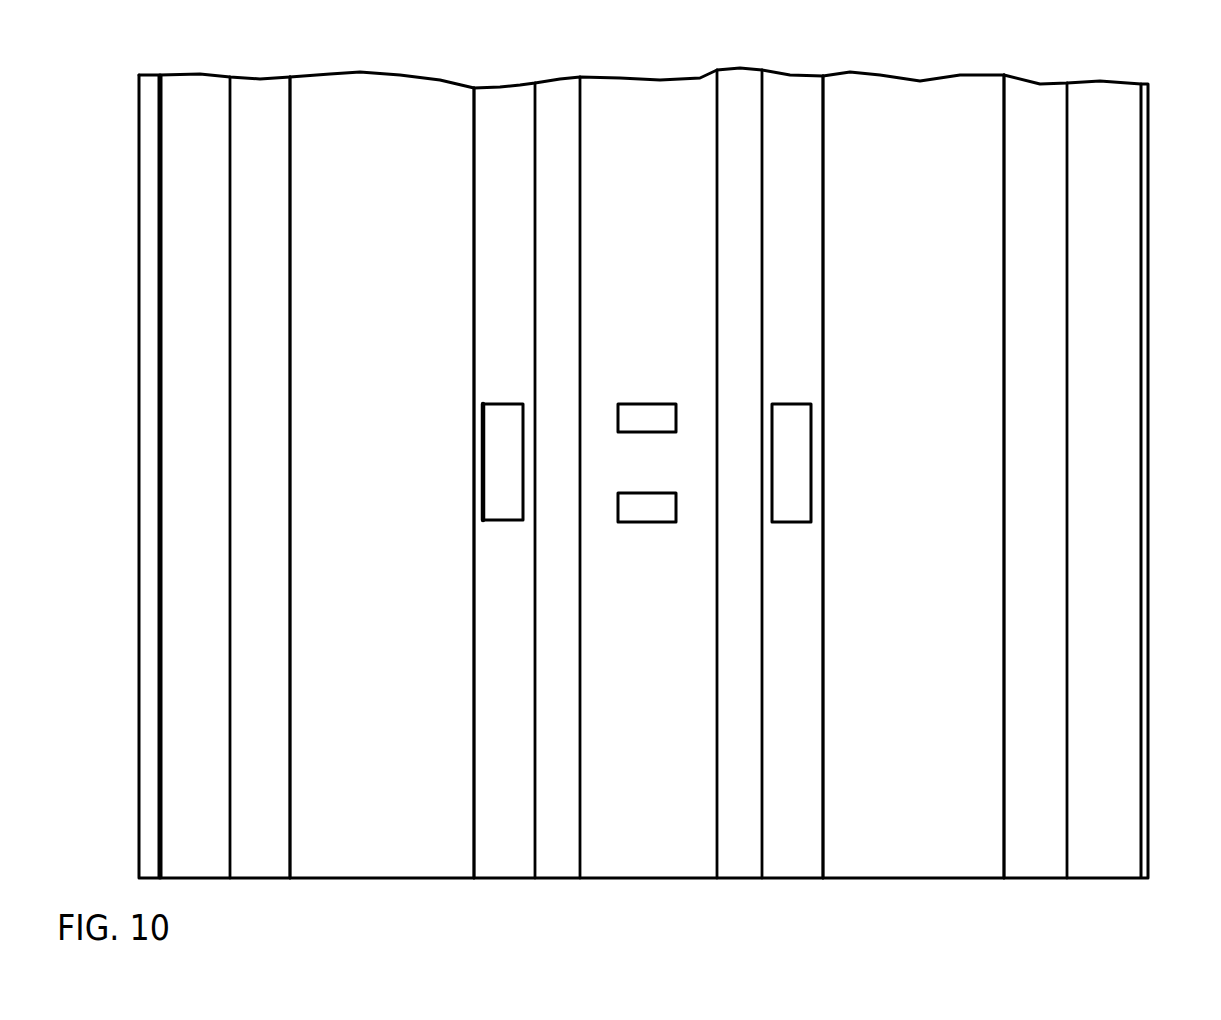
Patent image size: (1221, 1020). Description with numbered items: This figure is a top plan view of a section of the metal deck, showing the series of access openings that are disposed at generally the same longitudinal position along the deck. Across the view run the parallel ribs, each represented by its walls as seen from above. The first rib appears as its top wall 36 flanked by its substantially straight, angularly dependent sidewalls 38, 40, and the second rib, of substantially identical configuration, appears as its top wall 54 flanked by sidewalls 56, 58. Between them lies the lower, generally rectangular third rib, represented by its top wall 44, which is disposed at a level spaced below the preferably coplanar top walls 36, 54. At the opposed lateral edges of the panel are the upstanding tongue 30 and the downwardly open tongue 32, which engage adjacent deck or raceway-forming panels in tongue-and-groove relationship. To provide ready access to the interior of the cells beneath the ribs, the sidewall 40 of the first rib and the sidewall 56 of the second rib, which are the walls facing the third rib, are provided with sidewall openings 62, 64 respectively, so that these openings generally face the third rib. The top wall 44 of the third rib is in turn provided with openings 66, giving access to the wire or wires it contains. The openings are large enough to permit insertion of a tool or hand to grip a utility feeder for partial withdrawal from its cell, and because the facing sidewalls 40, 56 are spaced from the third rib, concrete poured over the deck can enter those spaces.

The upstanding tongue 30 is at (1145, 410).
The downwardly open tongue 32 is at (146, 413).
The top wall 36 is at (396, 826).
The sidewall 38 is at (271, 826).
The sidewall 40 is at (516, 826).
The top wall 44 is at (656, 826).
The top wall 54 is at (920, 826).
The sidewall 56 is at (804, 826).
The sidewall 58 is at (1049, 826).
The sidewall opening 62 is at (490, 420).
The sidewall opening 64 is at (798, 428).
The openings 66 is at (633, 423).